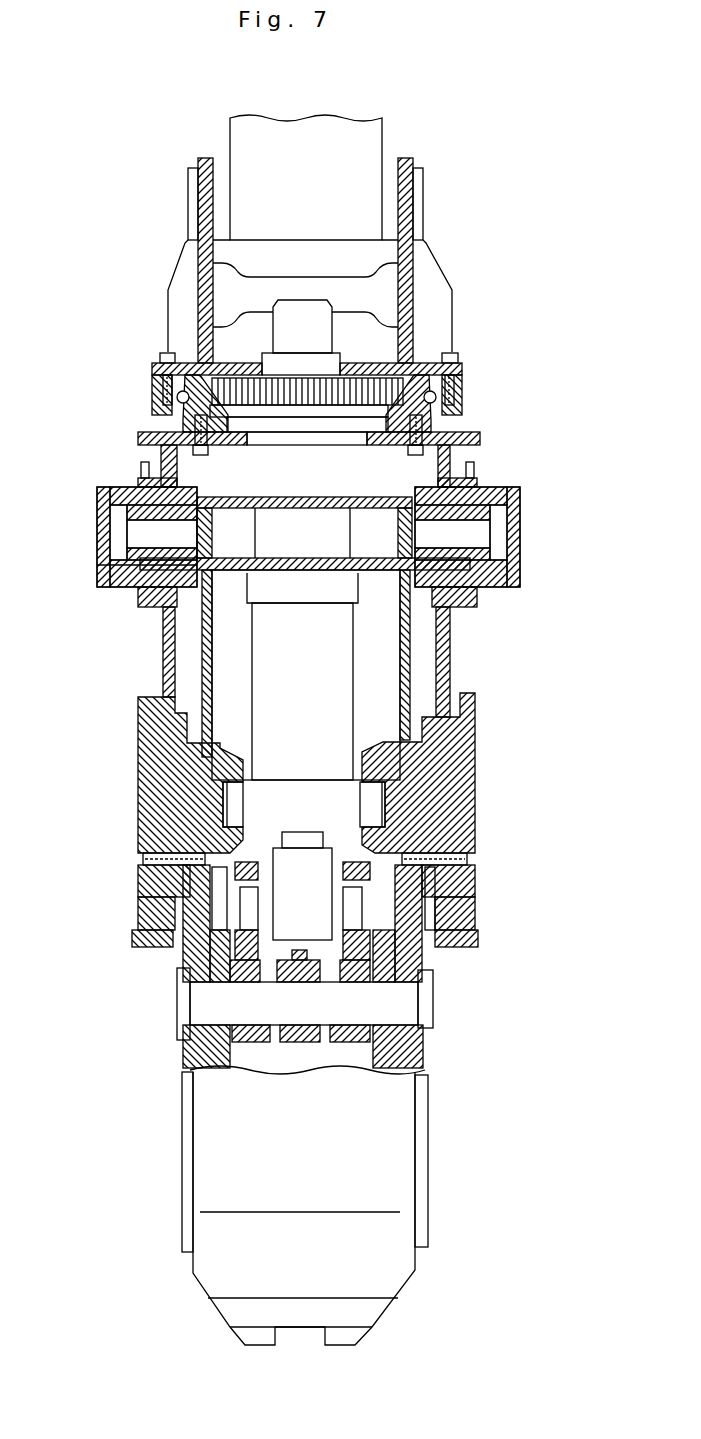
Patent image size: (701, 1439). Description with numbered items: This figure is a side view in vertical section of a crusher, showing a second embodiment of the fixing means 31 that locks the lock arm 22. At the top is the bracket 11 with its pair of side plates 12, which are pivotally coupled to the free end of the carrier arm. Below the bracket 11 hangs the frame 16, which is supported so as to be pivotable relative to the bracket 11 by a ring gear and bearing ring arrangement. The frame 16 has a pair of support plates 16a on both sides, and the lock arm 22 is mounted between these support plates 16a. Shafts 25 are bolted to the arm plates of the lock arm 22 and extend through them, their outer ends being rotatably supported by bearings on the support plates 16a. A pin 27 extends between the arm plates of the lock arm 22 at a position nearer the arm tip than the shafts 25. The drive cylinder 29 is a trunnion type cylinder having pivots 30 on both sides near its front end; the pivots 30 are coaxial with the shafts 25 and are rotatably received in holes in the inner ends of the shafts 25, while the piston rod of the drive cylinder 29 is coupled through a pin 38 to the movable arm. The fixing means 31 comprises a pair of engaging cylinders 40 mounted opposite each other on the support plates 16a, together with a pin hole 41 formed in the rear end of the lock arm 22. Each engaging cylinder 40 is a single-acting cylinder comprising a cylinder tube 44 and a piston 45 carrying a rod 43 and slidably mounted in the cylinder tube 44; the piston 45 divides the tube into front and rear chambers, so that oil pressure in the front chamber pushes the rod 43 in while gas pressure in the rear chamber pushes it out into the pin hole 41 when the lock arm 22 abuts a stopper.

The bracket 11 is at (428, 353).
The side plates 12 is at (203, 218).
The frame 16 is at (140, 438).
The support plates 16a is at (165, 635).
The lock arm 22 is at (200, 664).
The shafts 25 is at (145, 773).
The pin 27 is at (183, 1002).
The drive cylinder 29 is at (338, 697).
The pivots 30 is at (232, 803).
The fixing means 31 is at (125, 478).
The pin 38 is at (360, 908).
The engaging cylinders 40 is at (88, 510).
The pin hole 41 is at (370, 525).
The rods 43 is at (208, 540).
The cylinder tube 44 is at (97, 540).
The piston 45 is at (100, 565).